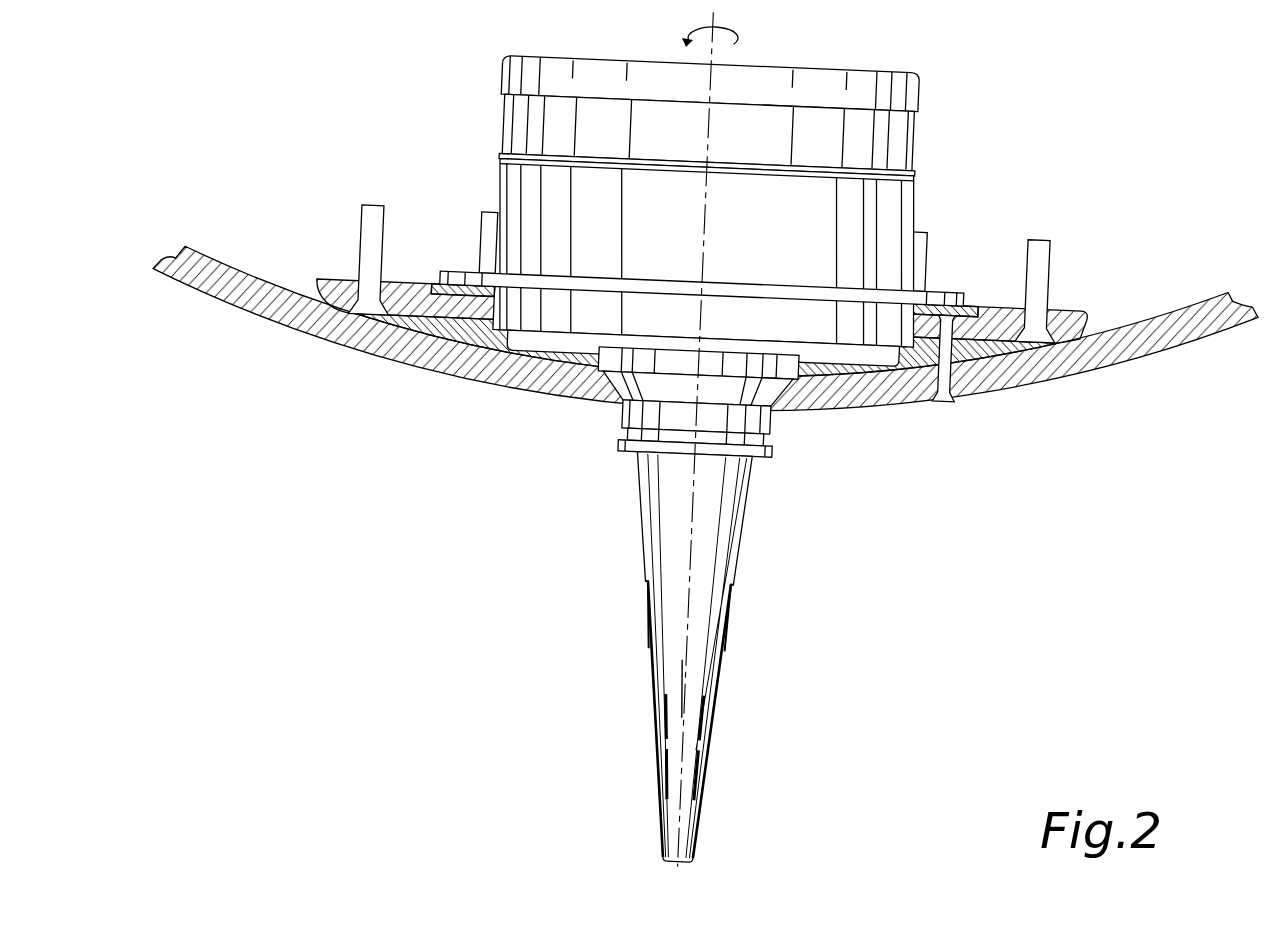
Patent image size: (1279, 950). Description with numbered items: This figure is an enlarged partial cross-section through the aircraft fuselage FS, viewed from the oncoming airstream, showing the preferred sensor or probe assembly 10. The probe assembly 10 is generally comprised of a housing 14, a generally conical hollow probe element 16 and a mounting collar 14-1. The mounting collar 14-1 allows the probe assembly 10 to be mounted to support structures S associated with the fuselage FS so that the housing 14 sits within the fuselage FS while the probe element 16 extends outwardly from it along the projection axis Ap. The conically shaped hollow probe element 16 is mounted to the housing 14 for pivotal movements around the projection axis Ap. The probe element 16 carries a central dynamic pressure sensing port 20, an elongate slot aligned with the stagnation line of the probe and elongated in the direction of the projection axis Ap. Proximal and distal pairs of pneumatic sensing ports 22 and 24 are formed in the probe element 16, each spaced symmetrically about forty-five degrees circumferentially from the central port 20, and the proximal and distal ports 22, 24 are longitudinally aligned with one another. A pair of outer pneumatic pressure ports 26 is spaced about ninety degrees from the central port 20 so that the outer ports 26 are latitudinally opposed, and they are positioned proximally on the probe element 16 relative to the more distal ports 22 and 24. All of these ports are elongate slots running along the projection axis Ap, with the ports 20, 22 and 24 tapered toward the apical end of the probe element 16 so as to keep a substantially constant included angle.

The probe assembly 10 is at (703, 439).
The housing 14 is at (680, 209).
The mounting collar 14-1 is at (943, 293).
The probe element 16 is at (682, 658).
The central dynamic pressure sensing port 20 is at (682, 689).
The proximal pneumatic sensing ports 22 is at (684, 717).
The distal pneumatic sensing ports 24 is at (681, 774).
The outer pneumatic pressure ports 26 is at (688, 616).
The support structures S is at (397, 290).
The fuselage FS is at (1152, 342).
The projection axis Ap is at (666, 439).